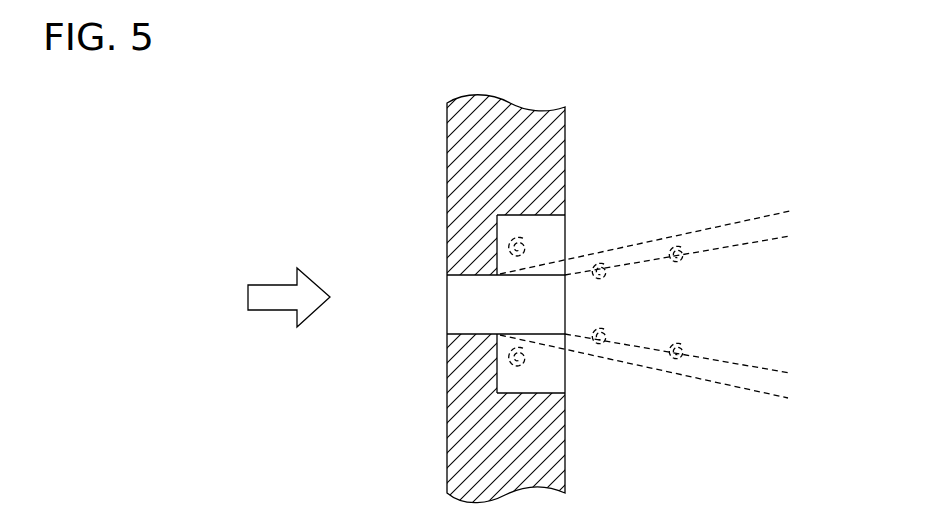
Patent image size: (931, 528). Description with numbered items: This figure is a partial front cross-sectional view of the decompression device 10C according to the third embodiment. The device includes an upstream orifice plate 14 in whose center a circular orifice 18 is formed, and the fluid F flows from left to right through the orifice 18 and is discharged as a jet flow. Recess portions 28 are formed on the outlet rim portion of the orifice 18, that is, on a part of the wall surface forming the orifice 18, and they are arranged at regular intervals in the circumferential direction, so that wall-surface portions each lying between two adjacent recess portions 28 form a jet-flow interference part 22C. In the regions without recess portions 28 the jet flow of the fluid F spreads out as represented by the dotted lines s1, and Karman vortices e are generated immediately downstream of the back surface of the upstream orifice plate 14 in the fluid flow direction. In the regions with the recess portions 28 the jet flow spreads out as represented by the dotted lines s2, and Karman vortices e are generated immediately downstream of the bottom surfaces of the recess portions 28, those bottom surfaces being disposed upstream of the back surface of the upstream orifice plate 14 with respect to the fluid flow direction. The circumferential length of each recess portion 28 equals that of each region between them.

The decompression device 10C is at (402, 127).
The upstream orifice plate 14 is at (460, 165).
The orifice 18 is at (460, 275).
The jet-flow interference part 22C is at (540, 309).
The recess portion 28 is at (543, 393).
The Karman vortices e is at (530, 245).
The dotted lines representing jet flow in regions without recess portions s1 is at (767, 238).
The dotted lines representing jet flow in regions with recess portions s2 is at (765, 210).
The fluid F is at (275, 284).